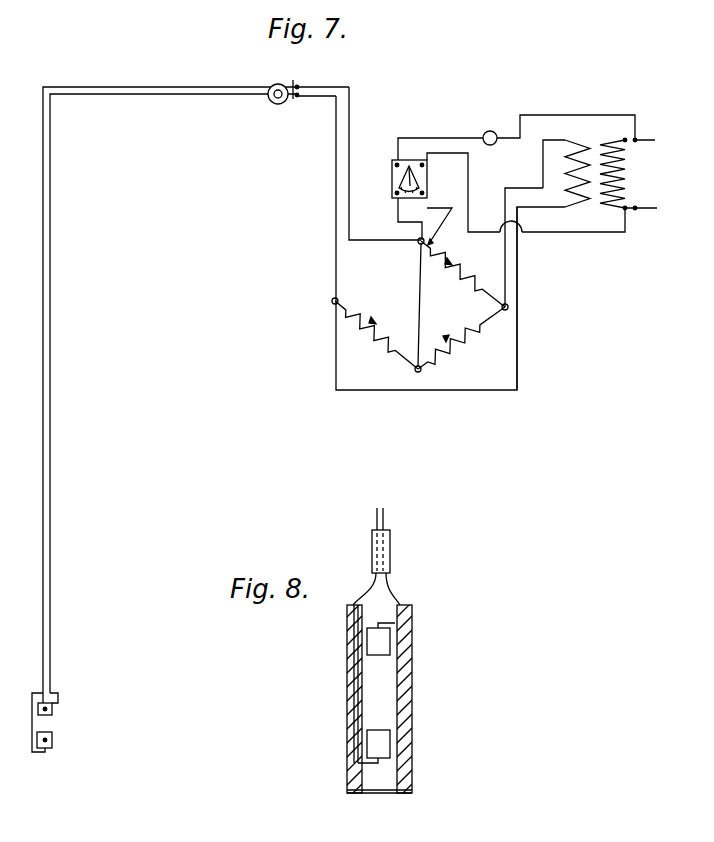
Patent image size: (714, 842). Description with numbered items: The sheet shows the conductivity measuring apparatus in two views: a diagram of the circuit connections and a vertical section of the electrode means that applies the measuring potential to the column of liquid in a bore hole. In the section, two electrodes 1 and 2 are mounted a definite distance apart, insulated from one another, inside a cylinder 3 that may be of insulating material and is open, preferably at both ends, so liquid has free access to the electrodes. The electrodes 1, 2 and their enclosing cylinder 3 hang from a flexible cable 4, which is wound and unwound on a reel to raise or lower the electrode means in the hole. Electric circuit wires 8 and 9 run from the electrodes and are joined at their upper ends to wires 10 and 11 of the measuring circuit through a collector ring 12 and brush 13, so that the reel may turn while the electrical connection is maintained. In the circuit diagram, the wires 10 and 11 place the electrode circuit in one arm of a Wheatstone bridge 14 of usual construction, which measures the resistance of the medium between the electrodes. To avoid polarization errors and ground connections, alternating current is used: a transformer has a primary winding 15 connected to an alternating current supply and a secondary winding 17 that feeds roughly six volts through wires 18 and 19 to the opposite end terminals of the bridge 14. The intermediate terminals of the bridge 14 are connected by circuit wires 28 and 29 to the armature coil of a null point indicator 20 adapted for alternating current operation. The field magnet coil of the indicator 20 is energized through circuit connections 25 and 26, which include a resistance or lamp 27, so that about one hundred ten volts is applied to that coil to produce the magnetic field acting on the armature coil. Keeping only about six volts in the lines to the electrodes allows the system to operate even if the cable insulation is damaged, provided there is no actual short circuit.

In FIG. 7, the electrode 1 is at (52, 710).
In FIG. 8, the electrode 1 is at (385, 642).
In FIG. 7, the electrode 2 is at (52, 740).
In FIG. 8, the electrode 2 is at (370, 742).
In FIG. 8, the cylinder 3 is at (410, 672).
In FIG. 8, the cable 4 is at (388, 550).
In FIG. 7, the electric circuit wire 8 is at (50, 400).
In FIG. 8, the electric circuit wire 8 is at (390, 582).
In FIG. 7, the electric circuit wire 9 is at (42, 415).
In FIG. 8, the electric circuit wire 9 is at (365, 585).
In FIG. 7, the wire 10 is at (335, 165).
In FIG. 7, the wire 11 is at (350, 163).
In FIG. 7, the collector ring 12 is at (276, 104).
In FIG. 7, the brush 13 is at (293, 80).
In FIG. 7, the Wheatstone bridge 14 is at (420, 305).
In FIG. 7, the primary winding 15 is at (630, 170).
In FIG. 7, the secondary winding 17 is at (565, 163).
In FIG. 7, the wire 18 is at (506, 268).
In FIG. 7, the wire 19 is at (518, 292).
In FIG. 7, the null point indicator 20 is at (392, 172).
In FIG. 7, the energizing circuit connection 25 is at (420, 136).
In FIG. 7, the energizing circuit connection 26 is at (447, 152).
In FIG. 7, the resistance or lamp 27 is at (491, 131).
In FIG. 7, the circuit wire 28 is at (396, 210).
In FIG. 7, the circuit wire 29 is at (440, 207).